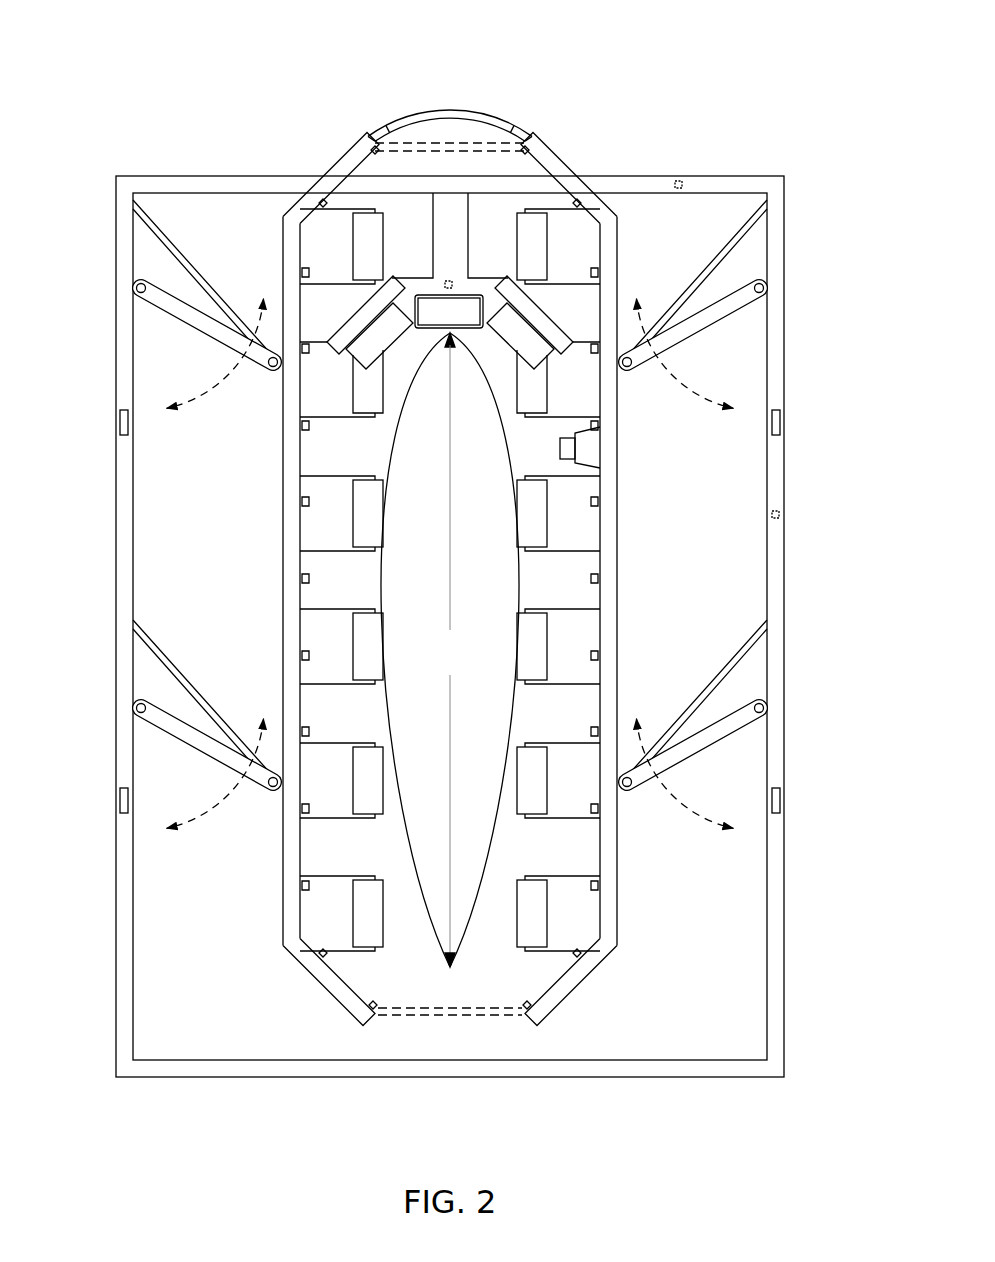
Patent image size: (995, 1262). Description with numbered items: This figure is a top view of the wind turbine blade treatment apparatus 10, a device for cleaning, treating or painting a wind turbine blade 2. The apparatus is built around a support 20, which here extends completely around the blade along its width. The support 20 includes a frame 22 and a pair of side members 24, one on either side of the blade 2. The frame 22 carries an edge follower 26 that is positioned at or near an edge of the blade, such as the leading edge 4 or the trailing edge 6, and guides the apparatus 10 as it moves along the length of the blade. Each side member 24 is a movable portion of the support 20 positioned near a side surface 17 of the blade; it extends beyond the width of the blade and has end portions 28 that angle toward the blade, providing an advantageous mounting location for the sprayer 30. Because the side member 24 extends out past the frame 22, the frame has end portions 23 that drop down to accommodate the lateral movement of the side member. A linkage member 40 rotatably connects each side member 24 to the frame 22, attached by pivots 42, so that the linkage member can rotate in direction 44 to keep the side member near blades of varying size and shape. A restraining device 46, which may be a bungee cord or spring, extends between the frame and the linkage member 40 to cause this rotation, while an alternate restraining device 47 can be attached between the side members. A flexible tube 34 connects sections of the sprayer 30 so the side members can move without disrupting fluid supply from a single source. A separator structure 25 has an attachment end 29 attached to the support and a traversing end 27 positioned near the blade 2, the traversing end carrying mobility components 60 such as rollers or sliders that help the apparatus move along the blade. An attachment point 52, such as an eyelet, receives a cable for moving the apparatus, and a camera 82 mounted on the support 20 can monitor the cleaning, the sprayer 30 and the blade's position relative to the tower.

The wind turbine blade treatment apparatus 10 is at (148, 42).
The wind turbine blade 2 is at (517, 650).
The leading edge 4 is at (445, 318).
The trailing edge 6 is at (448, 977).
The side surface 17 is at (384, 584).
The support 20 is at (472, 585).
The frame 22 is at (738, 176).
The end portions 23 is at (182, 187).
The side member 24 is at (618, 593).
The separator structure 25 is at (330, 685).
The edge follower 26 is at (500, 285).
The traversing end 27 is at (377, 464).
The end portions 28 is at (556, 152).
The attachment end 29 is at (304, 545).
The sprayer 30 is at (449, 279).
The flexible tube 34 is at (432, 111).
The linkage member 40 is at (409, 535).
The pivots 42 is at (137, 293).
The direction 44 is at (199, 400).
The restraining device 46 is at (185, 277).
The restraining device 47 is at (458, 142).
The attachment point 52 is at (118, 418).
The mobility components 60 is at (375, 510).
The camera 82 is at (587, 453).